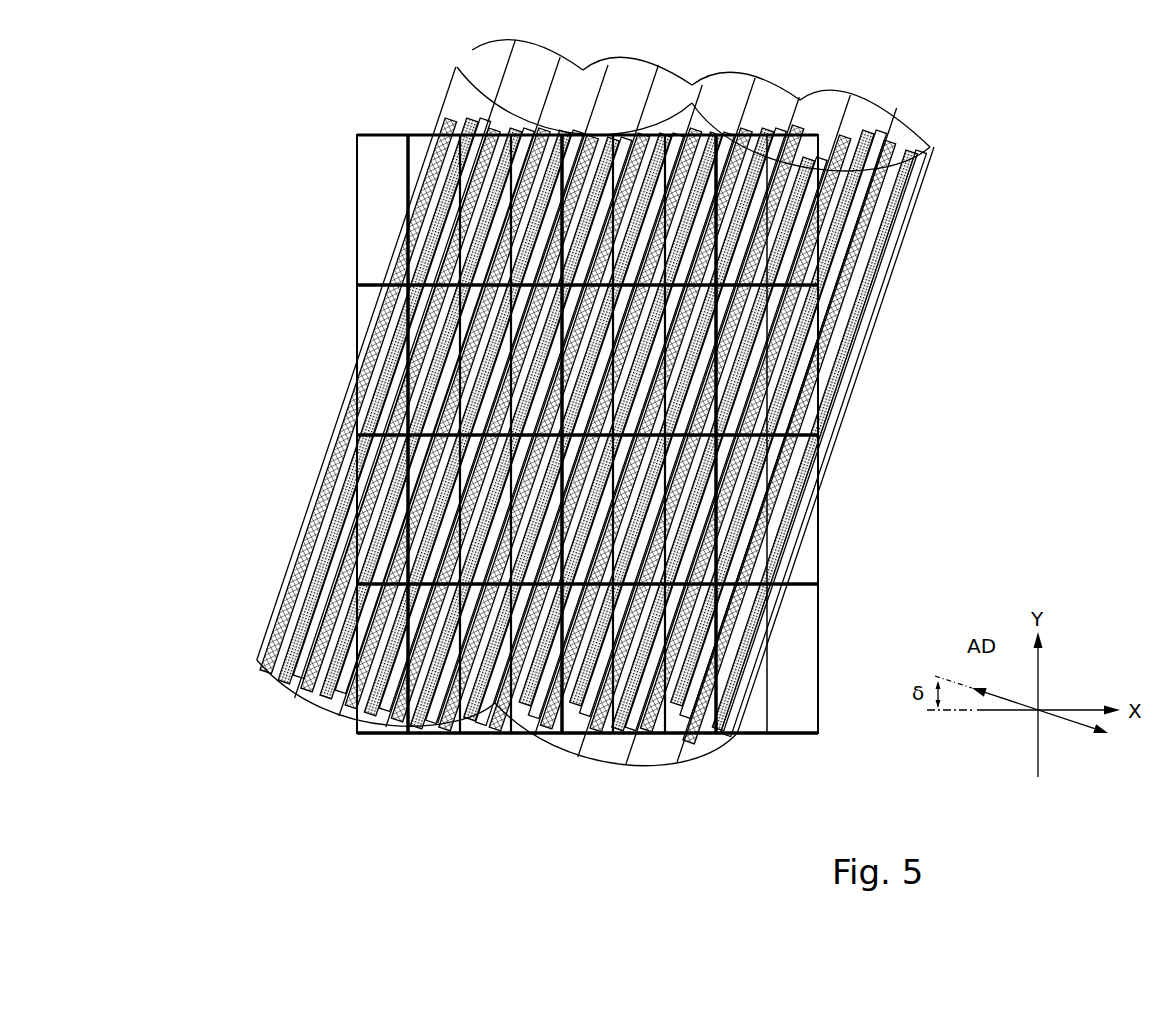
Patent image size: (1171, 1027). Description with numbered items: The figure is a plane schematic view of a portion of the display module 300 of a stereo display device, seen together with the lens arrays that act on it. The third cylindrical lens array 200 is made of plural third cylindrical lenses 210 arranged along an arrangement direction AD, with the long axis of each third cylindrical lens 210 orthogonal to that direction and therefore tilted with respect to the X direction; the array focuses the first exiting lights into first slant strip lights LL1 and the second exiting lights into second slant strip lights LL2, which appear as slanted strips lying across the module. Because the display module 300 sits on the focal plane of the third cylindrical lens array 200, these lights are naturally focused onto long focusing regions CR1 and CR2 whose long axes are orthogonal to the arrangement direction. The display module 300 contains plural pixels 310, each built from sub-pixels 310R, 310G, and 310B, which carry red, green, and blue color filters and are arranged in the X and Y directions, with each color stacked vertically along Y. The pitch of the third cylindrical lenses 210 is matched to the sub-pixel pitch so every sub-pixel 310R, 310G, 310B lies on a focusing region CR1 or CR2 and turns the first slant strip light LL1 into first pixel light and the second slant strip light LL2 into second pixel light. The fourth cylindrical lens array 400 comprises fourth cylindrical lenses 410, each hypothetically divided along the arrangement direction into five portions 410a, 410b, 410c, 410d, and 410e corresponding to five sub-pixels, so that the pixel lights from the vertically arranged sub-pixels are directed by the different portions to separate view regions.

The third cylindrical lens array 200 is at (950, 40).
The third cylindrical lens 210 is at (773, 80).
The display module 300 is at (340, 152).
The pixel 310 is at (196, 170).
The red sub-pixel 310R is at (438, 183).
The green sub-pixel 310G is at (480, 207).
The blue sub-pixel 310B is at (500, 235).
The fourth cylindrical lens array 400 is at (700, 822).
The fourth cylindrical lens 410 is at (667, 800).
The first portion of the fourth cylindrical lens 410a is at (282, 692).
The second portion of the fourth cylindrical lens 410b is at (320, 702).
The third portion of the fourth cylindrical lens 410c is at (368, 718).
The fourth portion of the fourth cylindrical lens 410d is at (420, 720).
The fifth portion of the fourth cylindrical lens 410e is at (535, 735).
The focusing region CR1 is at (455, 118).
The focusing region CR2 is at (476, 118).
The first slant strip light LL1 is at (310, 512).
The second slant strip light LL2 is at (305, 603).